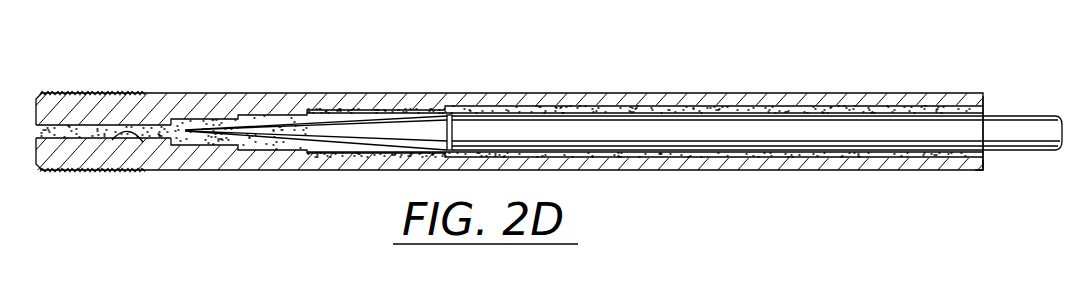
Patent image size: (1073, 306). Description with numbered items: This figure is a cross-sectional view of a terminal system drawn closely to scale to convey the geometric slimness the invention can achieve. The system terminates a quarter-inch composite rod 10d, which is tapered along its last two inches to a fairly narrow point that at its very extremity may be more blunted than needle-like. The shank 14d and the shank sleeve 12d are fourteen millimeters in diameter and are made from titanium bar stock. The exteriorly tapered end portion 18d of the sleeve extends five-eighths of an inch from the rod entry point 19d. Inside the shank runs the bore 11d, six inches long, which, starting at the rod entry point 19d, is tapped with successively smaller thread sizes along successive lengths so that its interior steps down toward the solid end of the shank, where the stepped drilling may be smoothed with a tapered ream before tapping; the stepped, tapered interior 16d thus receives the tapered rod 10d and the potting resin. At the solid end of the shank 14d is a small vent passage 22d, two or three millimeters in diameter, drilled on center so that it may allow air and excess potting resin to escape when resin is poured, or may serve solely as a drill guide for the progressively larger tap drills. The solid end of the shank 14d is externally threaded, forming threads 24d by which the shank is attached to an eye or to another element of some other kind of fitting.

The composite rod 10d is at (1012, 115).
The bore 11d is at (739, 110).
The shank sleeve 12d is at (598, 93).
The shank 14d is at (170, 93).
The stepped bore 16d is at (321, 98).
The exteriorly tapered end portion 18d is at (936, 96).
The rod entry point 19d is at (983, 176).
The vent passage 22d is at (143, 142).
The threads 24d is at (80, 170).